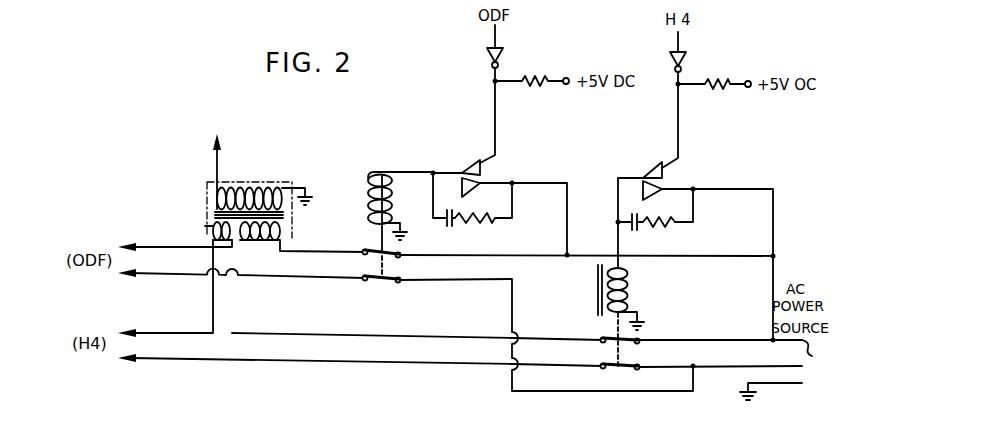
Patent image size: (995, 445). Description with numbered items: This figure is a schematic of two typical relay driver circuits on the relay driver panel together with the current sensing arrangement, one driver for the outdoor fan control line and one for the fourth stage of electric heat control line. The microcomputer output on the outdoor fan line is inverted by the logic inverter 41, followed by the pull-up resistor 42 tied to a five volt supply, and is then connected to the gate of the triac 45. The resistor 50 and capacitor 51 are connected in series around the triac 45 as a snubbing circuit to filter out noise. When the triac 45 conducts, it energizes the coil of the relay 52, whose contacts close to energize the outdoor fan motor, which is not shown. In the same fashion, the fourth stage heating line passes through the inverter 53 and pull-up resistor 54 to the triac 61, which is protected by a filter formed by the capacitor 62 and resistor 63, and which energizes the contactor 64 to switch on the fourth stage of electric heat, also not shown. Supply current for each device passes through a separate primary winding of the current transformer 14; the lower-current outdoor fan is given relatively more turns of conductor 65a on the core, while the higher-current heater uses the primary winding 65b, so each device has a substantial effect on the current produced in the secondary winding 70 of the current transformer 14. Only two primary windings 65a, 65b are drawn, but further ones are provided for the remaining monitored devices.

The current transformer 14 is at (249, 182).
The secondary winding 70 is at (211, 193).
The primary winding 65a is at (288, 238).
The primary winding 65b is at (206, 233).
The relay 52 is at (367, 186).
The triac 45 is at (472, 165).
The resistor 50 is at (484, 226).
The capacitor 51 is at (449, 224).
The logic inverter 41 is at (503, 54).
The pull-up resistor 42 is at (535, 75).
The inverter 53 is at (687, 53).
The pull-up resistor 54 is at (716, 78).
The triac 61 is at (647, 165).
The capacitor 62 is at (638, 230).
The resistor 63 is at (674, 228).
The contactor 64 is at (632, 280).